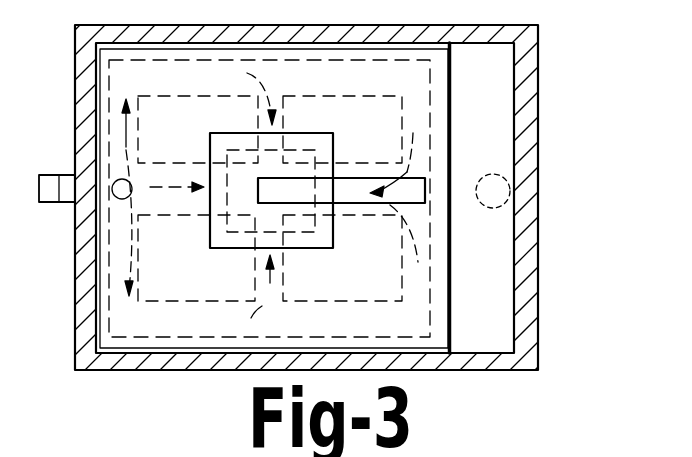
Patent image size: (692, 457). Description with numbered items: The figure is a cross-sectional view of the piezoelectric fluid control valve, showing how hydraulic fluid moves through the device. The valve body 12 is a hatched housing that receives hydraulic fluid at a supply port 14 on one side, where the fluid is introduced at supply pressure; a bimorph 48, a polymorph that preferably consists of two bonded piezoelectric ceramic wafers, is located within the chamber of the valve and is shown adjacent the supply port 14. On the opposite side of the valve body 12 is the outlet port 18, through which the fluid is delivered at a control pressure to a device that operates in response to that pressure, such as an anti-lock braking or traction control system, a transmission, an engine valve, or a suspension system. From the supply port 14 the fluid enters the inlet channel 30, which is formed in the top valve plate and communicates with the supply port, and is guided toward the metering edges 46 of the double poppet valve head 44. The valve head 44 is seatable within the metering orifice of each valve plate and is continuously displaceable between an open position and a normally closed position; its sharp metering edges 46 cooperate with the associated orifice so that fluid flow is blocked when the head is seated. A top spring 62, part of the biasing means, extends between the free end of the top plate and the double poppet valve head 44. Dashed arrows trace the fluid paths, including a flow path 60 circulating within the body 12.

The valve body 12 is at (530, 263).
The supply port 14 is at (117, 197).
The outlet port 18 is at (509, 182).
The inlet channel 30 is at (170, 166).
The double poppet valve head 44 is at (246, 249).
The metering edges 46 is at (309, 253).
The bimorph 48 is at (47, 176).
The flow arrow 60 is at (386, 224).
The top spring 62 is at (353, 177).